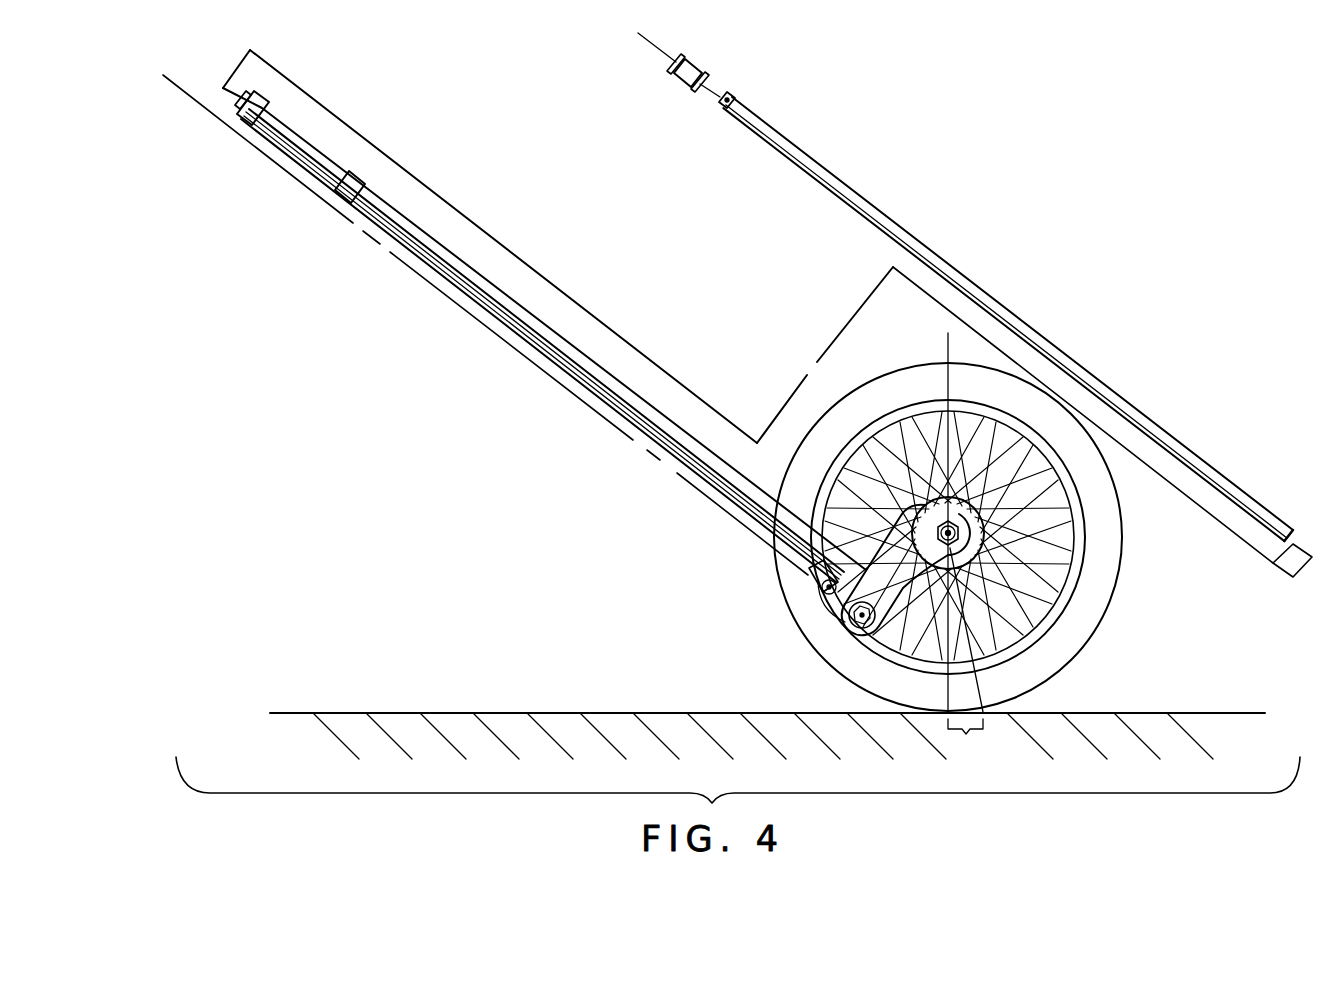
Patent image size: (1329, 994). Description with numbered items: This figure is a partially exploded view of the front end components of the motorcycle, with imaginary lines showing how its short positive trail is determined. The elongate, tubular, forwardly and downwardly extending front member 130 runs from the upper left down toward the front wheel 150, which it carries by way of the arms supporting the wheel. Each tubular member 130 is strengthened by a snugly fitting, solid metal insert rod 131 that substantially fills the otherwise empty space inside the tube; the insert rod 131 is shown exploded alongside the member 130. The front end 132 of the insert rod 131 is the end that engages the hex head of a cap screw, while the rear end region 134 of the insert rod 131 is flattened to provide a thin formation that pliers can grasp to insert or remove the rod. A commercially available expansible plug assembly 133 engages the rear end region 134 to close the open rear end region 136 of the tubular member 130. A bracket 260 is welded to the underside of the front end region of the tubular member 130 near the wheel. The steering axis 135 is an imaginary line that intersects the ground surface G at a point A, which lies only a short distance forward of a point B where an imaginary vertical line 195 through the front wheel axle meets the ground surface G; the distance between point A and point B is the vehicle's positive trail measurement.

The elongate tubular front member 130 is at (660, 405).
The insert rod 131 is at (937, 262).
The front end of insert rod 132 is at (1290, 550).
The expansible plug assembly 133 is at (702, 63).
The rear end region of insert rod 134 is at (733, 96).
The steering stem axis 135 is at (478, 328).
The open rear end region of tubular member 136 is at (236, 99).
The front wheel 150 is at (1100, 606).
The imaginary vertical line 195 is at (955, 380).
The bracket 260 is at (828, 606).
The ground surface G is at (511, 710).
The point A is at (983, 708).
The point B is at (948, 708).